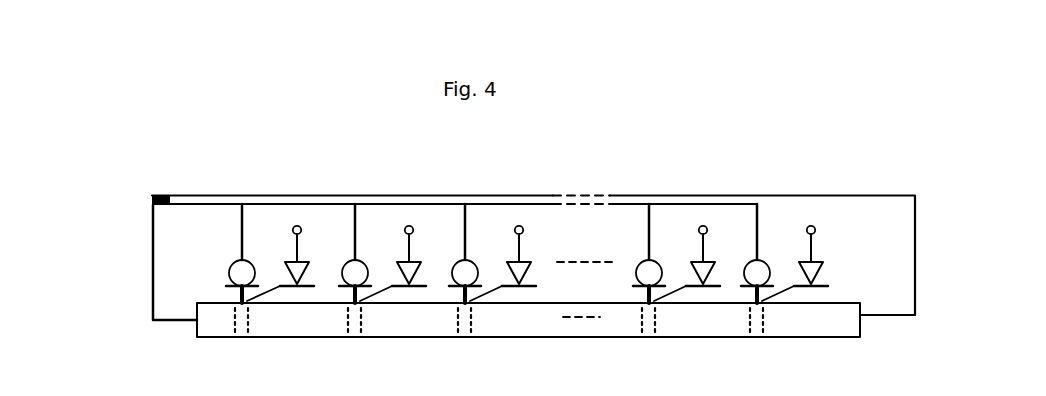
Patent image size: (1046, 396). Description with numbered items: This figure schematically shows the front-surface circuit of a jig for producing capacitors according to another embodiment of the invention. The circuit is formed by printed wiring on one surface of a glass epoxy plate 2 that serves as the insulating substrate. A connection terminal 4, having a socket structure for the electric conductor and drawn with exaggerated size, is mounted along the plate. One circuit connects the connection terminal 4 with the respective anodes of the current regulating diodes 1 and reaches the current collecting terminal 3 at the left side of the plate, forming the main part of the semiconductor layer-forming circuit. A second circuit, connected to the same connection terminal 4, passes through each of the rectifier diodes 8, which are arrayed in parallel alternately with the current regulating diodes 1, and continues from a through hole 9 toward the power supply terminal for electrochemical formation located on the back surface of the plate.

The current regulating diode 1 is at (247, 273).
The glass epoxy plate 2 is at (158, 267).
The current collecting terminal 3 is at (152, 206).
The connection terminal 4 is at (200, 327).
The rectifier diode 8 is at (313, 262).
The through hole 9 is at (300, 227).